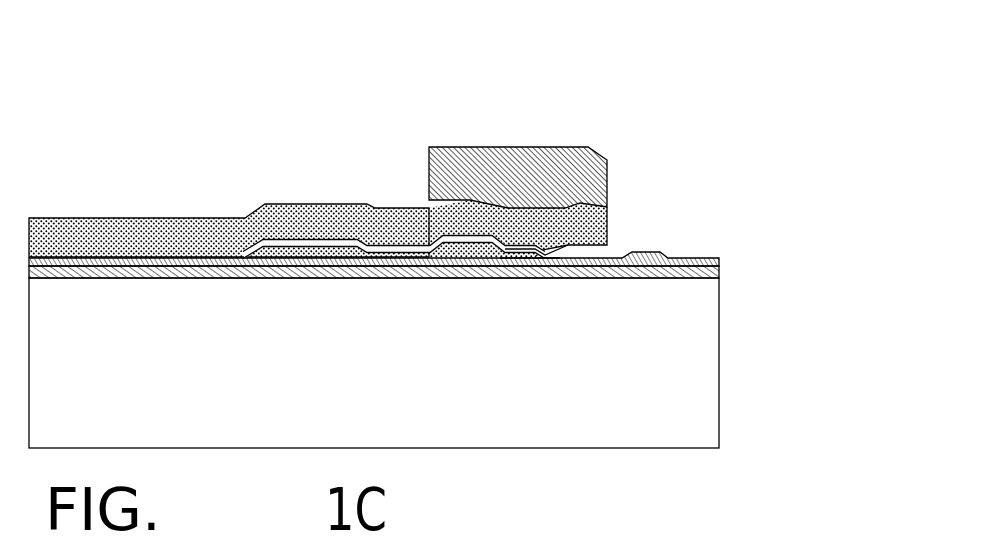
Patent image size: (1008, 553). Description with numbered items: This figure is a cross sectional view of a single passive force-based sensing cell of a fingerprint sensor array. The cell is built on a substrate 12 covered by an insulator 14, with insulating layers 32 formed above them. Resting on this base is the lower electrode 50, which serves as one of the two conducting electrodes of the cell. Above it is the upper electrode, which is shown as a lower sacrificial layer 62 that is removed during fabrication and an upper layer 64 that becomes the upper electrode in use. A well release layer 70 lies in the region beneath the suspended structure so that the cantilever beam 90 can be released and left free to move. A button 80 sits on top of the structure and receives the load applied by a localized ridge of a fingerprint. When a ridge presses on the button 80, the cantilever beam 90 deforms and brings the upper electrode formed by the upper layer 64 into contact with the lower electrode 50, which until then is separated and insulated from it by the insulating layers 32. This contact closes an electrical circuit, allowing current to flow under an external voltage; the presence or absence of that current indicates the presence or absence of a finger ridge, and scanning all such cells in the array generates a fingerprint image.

The substrate 12 is at (471, 313).
The insulator 14 is at (471, 208).
The insulating layers 32 is at (391, 153).
The lower electrode 50 is at (435, 165).
The lower sacrificial layer 62 is at (591, 149).
The upper layer 64 is at (629, 168).
The well release layer 70 is at (359, 191).
The button 80 is at (591, 104).
The cantilever beam 90 is at (229, 169).